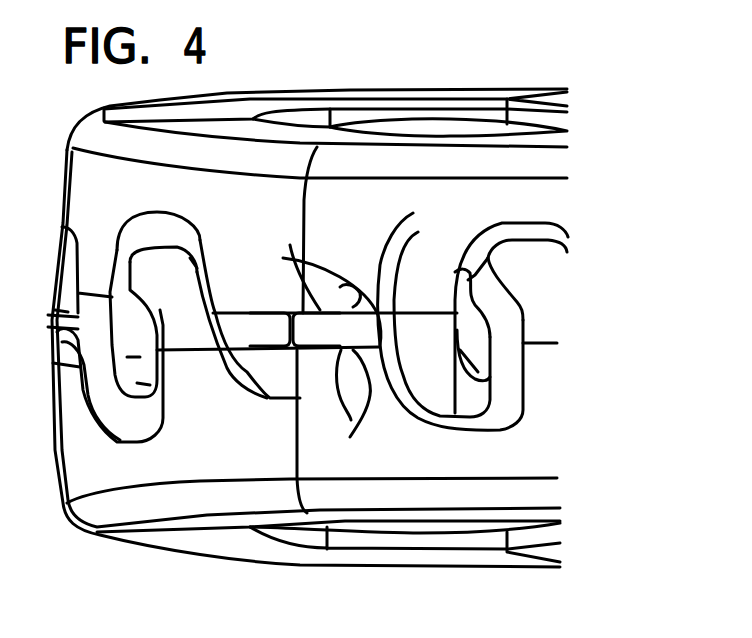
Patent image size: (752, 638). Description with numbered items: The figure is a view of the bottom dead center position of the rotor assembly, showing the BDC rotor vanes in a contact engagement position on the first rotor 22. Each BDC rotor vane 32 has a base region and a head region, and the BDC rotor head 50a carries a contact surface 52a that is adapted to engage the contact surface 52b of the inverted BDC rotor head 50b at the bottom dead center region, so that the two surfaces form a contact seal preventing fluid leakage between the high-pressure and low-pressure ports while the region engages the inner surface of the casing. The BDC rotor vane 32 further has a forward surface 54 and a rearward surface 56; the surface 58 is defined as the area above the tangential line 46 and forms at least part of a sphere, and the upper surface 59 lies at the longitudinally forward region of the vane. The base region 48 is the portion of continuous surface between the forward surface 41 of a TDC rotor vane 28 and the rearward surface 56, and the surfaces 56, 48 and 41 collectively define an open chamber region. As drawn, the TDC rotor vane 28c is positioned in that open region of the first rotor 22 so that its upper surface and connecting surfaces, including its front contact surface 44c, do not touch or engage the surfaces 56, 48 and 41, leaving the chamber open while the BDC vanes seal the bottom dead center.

The first rotor 22 is at (173, 475).
The TDC rotor vane 28 is at (528, 263).
The TDC rotor vane 28c is at (440, 330).
The BDC rotor vane 32 is at (351, 420).
The forward surface 41 is at (507, 313).
The front contact surface 44c is at (513, 428).
The tangential line 46 is at (383, 400).
The base region 48 is at (350, 437).
The BDC rotor head 50a is at (333, 310).
The inverted BDC rotor head 50b is at (247, 313).
The contact surface 52a is at (283, 307).
The contact surface 52b is at (265, 375).
The forward surface 54 is at (320, 360).
The rearward surface 56 is at (388, 303).
The spherical surface 58 is at (350, 307).
The upper surface 59 is at (320, 307).